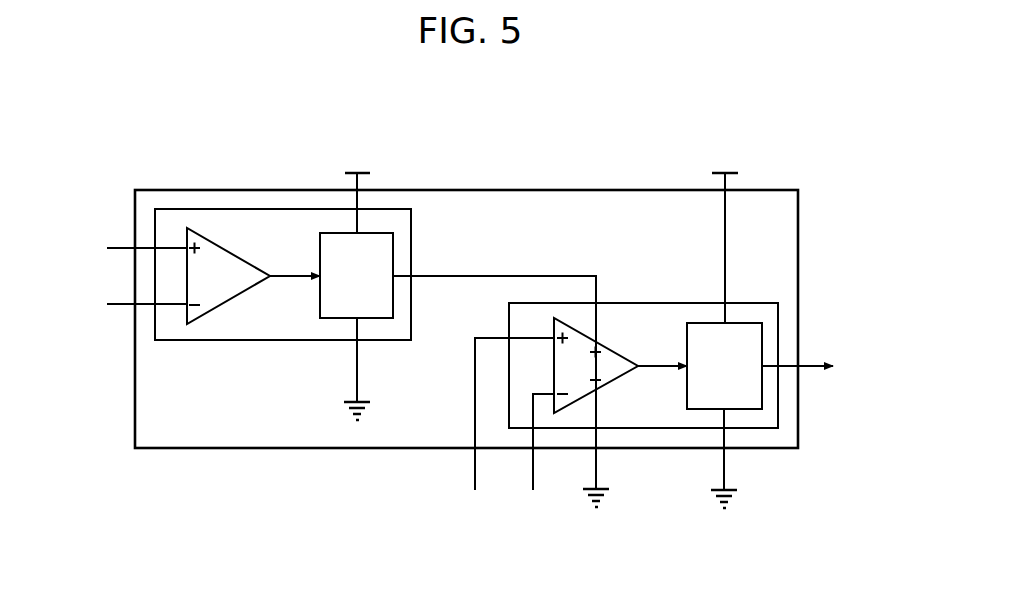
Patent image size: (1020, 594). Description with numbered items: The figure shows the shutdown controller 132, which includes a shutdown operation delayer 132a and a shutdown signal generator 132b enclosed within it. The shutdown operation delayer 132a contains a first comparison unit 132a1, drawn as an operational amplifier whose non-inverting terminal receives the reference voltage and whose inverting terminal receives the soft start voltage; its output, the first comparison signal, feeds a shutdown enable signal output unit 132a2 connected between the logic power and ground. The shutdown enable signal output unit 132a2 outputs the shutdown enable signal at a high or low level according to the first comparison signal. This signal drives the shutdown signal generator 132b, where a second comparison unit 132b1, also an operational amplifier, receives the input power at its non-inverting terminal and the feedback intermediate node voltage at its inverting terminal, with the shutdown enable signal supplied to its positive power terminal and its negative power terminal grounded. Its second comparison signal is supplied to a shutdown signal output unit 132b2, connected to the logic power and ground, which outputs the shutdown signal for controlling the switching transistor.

The shutdown controller 132 is at (135, 190).
The shutdown operation delayer 132a is at (270, 209).
The first comparison unit 132a1 is at (222, 305).
The shutdown enable signal output unit 132a2 is at (333, 288).
The shutdown signal generator 132b is at (632, 303).
The second comparison unit 132b1 is at (617, 383).
The shutdown signal output unit 132b2 is at (698, 378).